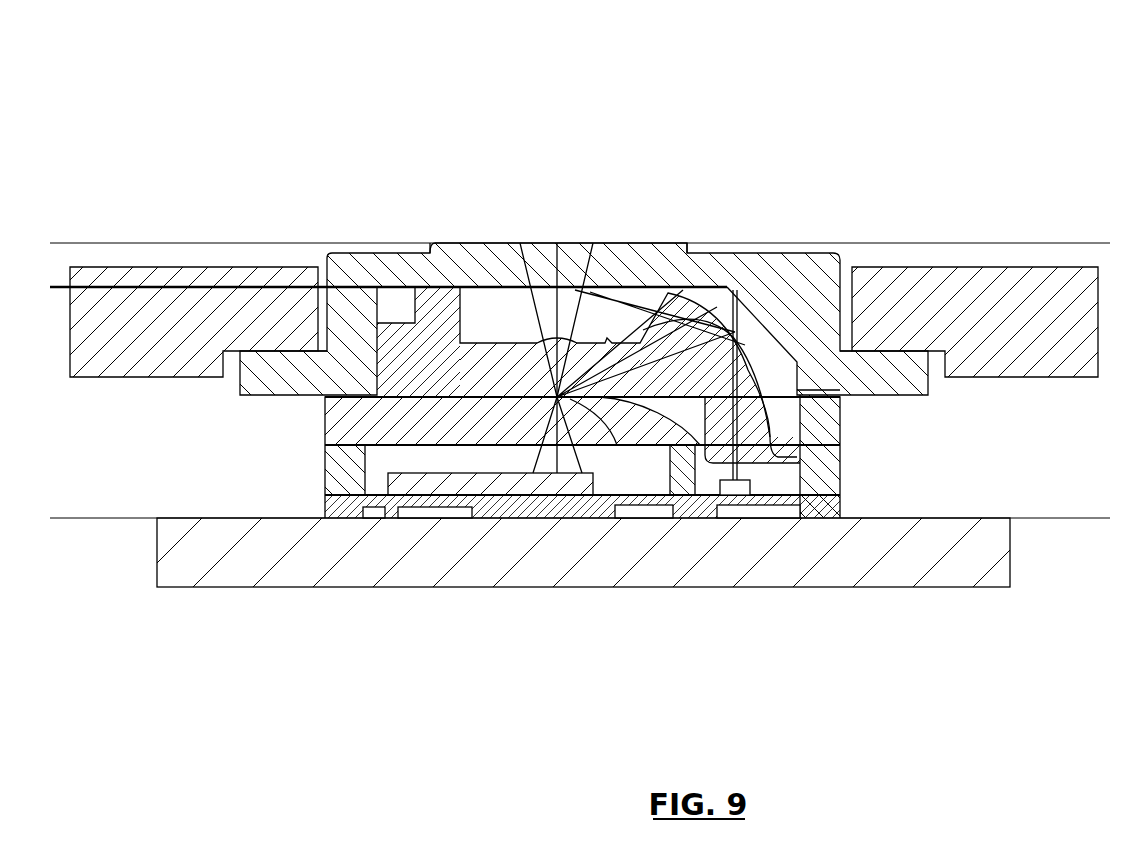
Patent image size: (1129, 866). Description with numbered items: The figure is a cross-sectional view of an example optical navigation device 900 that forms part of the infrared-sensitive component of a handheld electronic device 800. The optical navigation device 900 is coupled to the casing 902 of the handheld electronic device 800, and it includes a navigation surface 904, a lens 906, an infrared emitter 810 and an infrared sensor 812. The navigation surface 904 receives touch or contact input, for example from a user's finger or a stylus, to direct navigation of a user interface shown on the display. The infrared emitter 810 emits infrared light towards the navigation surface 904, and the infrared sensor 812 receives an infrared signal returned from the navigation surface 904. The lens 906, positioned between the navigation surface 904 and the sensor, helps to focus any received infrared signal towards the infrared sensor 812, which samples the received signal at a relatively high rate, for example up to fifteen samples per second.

The handheld electronic device 800 is at (935, 265).
The infrared emitter 810 is at (741, 505).
The infrared sensor 812 is at (412, 576).
The optical navigation device 900 is at (610, 242).
The casing 902 is at (630, 588).
The navigation surface 904 is at (497, 260).
The lens 906 is at (488, 335).